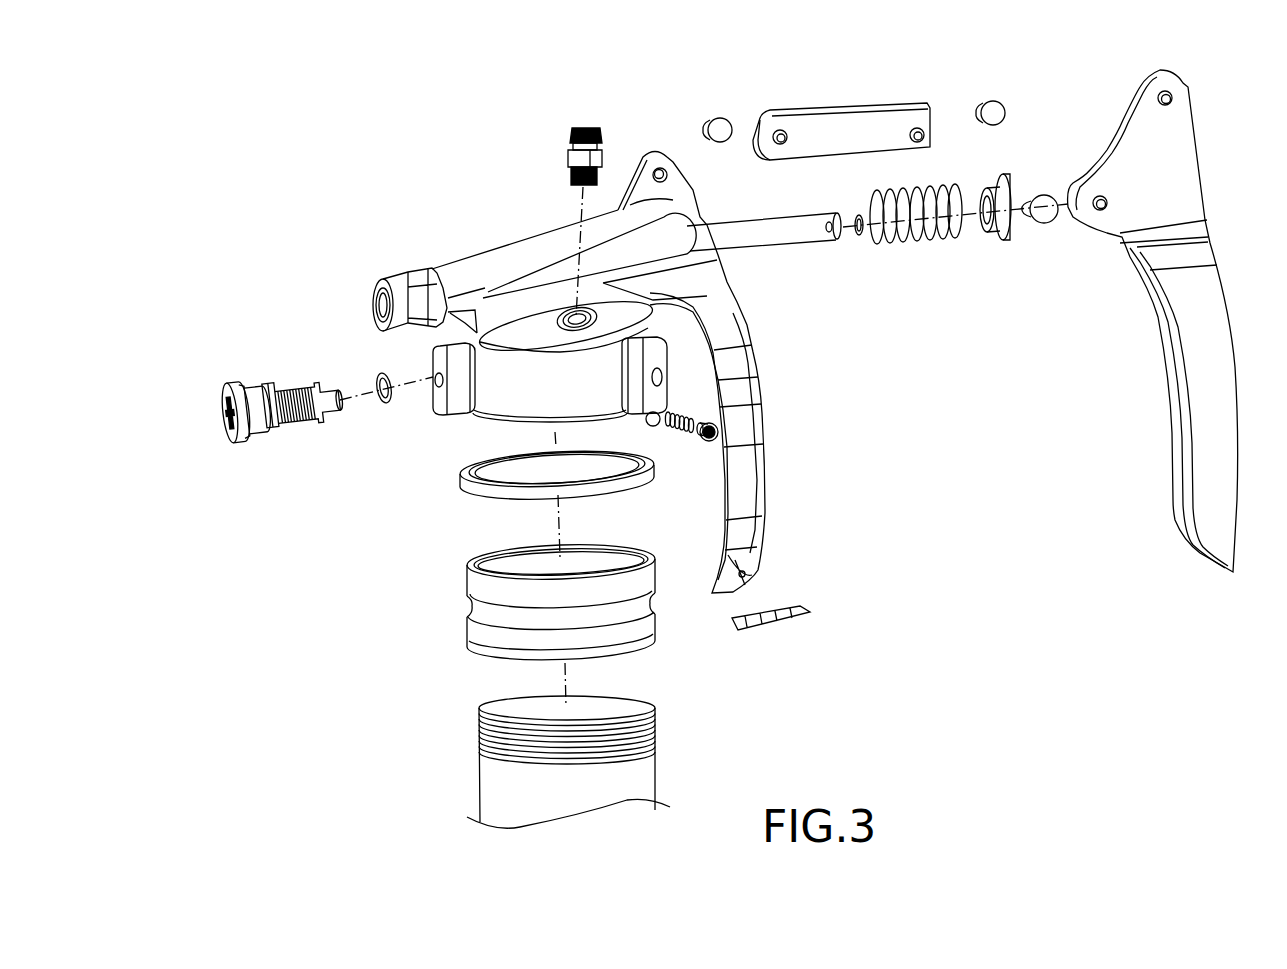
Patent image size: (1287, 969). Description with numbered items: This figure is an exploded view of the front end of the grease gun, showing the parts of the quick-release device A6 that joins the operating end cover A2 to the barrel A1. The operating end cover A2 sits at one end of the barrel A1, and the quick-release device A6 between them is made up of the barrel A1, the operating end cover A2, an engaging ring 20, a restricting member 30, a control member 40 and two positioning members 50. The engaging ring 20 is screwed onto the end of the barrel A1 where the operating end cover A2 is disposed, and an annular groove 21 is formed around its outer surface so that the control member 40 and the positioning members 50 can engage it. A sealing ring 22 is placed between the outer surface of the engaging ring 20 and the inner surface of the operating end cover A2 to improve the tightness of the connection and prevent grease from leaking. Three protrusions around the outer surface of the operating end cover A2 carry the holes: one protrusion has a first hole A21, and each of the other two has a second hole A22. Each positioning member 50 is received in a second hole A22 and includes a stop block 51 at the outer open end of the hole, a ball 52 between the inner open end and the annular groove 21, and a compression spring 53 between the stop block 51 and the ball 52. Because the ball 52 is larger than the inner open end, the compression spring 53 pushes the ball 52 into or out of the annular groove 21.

The barrel A1 is at (477, 762).
The operating end cover A2 is at (497, 402).
The first hole A21 is at (435, 377).
The second hole A22 is at (662, 372).
The quick-release device A6 is at (304, 409).
The engaging ring 20 is at (511, 599).
The annular groove 21 is at (487, 613).
The sealing ring 22 is at (465, 482).
The restricting member 30 is at (272, 437).
The control member 40 is at (231, 430).
The positioning member 50 is at (737, 460).
The stop block 51 is at (722, 430).
The ball 52 is at (653, 426).
The compression spring 53 is at (690, 418).